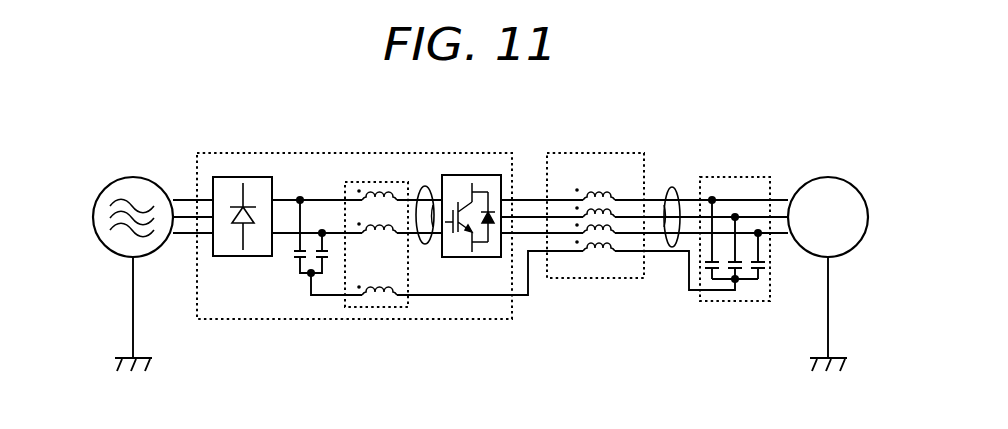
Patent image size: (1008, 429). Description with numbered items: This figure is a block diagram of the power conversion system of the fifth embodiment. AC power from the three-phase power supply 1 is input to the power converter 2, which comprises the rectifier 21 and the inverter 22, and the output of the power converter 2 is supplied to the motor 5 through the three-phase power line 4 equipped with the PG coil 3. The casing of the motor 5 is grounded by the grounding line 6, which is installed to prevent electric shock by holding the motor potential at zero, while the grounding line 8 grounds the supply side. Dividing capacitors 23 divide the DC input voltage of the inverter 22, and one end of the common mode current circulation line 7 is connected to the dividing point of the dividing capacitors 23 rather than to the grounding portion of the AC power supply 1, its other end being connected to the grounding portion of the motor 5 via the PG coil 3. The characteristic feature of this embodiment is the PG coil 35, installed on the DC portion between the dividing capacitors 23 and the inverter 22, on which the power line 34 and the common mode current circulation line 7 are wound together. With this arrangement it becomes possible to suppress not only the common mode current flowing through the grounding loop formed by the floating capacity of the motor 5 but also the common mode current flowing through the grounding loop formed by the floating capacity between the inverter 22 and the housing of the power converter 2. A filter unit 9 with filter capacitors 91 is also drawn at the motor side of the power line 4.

The three-phase power supply 1 is at (113, 175).
The power converter 2 is at (260, 152).
The PG coil 3 is at (595, 150).
The three-phase power line 4 is at (672, 187).
The motor 5 is at (830, 177).
The grounding line 6 is at (828, 312).
The common mode current circulation line 7 is at (670, 247).
The grounding line 8 is at (133, 305).
The filter unit 9 is at (735, 177).
The rectifier 21 is at (243, 257).
The inverter 22 is at (480, 257).
The dividing capacitors 23 is at (308, 263).
The power line 34 is at (425, 244).
The PG coil 35 is at (380, 307).
The filter capacitors 91 is at (723, 269).